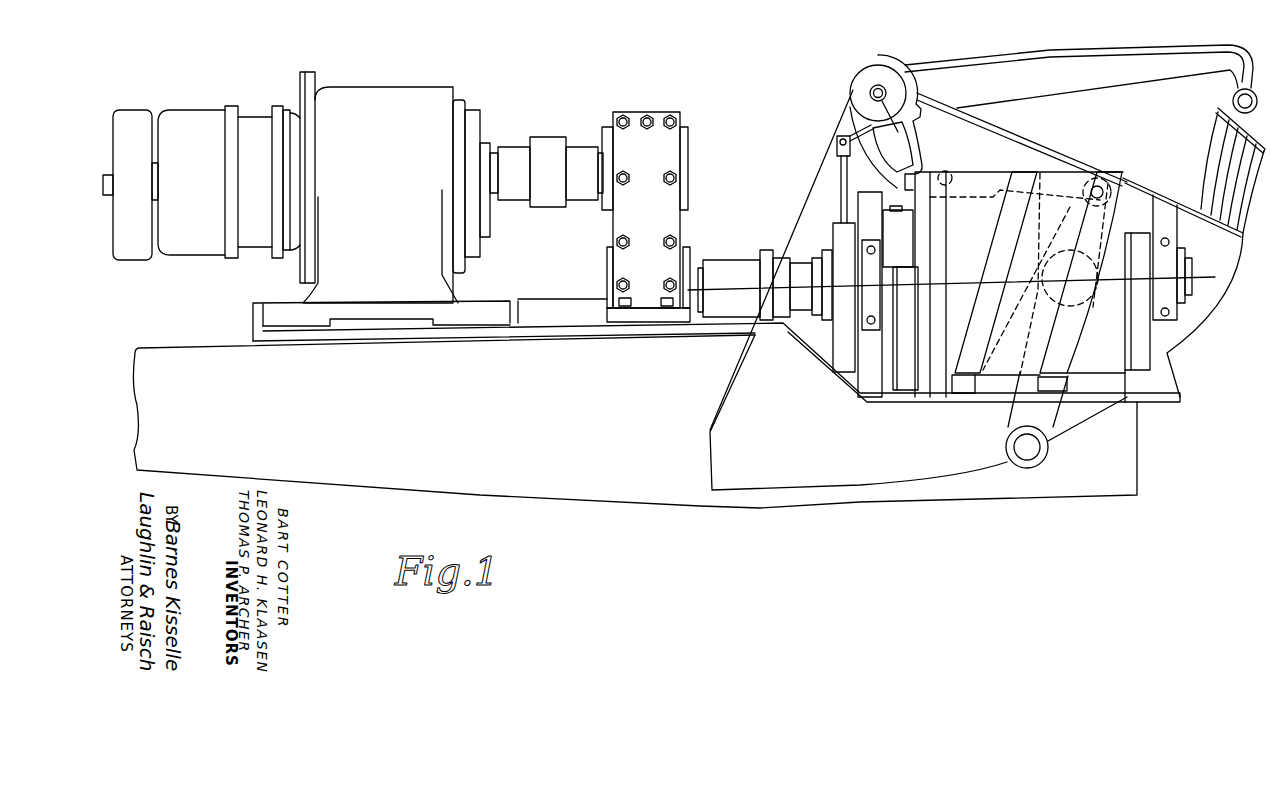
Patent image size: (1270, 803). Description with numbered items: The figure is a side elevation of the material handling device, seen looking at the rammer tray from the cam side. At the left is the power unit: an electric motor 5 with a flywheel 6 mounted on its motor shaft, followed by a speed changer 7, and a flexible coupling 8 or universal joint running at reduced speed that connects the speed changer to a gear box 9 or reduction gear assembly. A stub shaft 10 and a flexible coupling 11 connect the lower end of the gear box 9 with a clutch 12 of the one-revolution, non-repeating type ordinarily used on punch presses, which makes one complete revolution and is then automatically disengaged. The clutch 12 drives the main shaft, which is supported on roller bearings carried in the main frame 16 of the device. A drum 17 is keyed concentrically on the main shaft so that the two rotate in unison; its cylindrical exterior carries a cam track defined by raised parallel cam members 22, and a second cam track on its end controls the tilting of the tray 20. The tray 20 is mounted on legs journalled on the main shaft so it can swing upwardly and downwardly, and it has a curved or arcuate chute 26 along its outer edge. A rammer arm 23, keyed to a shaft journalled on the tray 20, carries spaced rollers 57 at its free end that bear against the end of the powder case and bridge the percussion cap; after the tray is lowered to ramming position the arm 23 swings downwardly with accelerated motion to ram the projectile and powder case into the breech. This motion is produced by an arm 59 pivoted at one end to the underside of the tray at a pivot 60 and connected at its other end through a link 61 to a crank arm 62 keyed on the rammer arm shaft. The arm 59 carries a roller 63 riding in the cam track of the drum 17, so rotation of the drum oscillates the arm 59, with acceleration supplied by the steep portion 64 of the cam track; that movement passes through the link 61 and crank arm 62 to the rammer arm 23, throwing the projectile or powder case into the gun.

The electric motor 5 is at (205, 108).
The flywheel 6 is at (130, 108).
The speed changer 7 is at (395, 87).
The flexible coupling 8 is at (548, 137).
The gear box 9 is at (672, 133).
The stub shaft 10 is at (700, 270).
The flexible coupling 11 is at (735, 265).
The clutch 12 is at (804, 262).
The main frame 16 is at (645, 330).
The drum 17 is at (1098, 363).
The tray 20 is at (793, 468).
The cam members 22 is at (1028, 172).
The rammer arm 23 is at (1085, 60).
The chute 26 is at (1211, 160).
The rollers 57 is at (1232, 100).
The arm 59 is at (1050, 427).
The pivot 60 is at (1025, 468).
The link 61 is at (980, 172).
The crank arm 62 is at (912, 143).
The roller 63 is at (1083, 307).
The steep portion of cam track 64 is at (1073, 348).